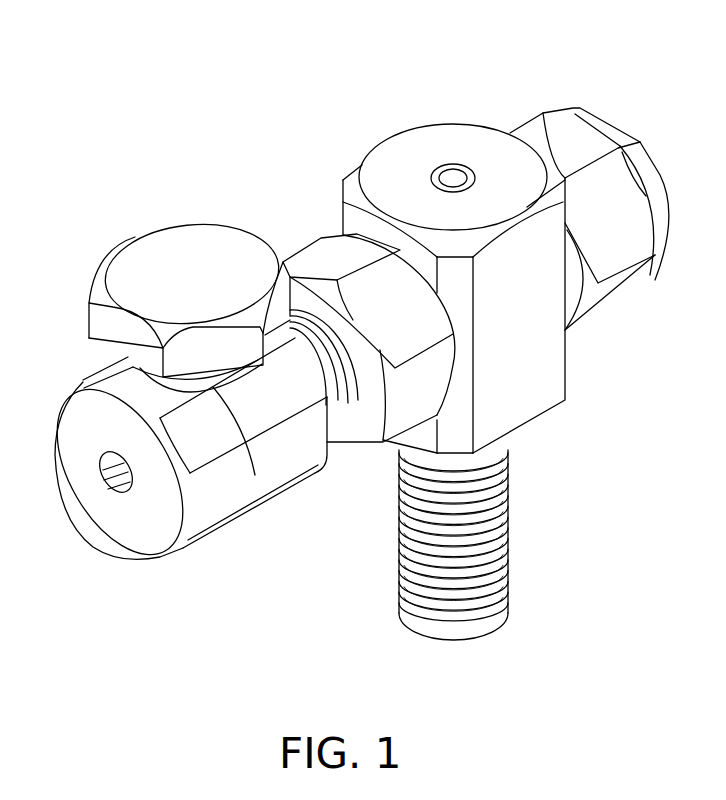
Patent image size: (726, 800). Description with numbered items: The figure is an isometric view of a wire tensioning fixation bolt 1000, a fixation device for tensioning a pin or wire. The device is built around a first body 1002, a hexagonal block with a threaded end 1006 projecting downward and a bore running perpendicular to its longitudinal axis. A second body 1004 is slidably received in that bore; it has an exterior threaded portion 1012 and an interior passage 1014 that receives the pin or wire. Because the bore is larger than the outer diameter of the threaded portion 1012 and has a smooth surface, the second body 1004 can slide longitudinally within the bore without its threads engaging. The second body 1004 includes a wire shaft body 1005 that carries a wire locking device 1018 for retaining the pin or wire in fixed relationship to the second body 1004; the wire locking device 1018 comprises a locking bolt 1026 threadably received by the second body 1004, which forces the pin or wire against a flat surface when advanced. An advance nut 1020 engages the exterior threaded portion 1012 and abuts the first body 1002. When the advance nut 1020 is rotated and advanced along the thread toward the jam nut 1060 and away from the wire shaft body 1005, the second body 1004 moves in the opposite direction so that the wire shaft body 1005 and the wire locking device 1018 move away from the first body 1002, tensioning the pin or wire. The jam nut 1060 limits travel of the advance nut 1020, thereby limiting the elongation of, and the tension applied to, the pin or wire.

The wire tensioning fixation bolt 1000 is at (237, 96).
The first body 1002 is at (399, 119).
The second body 1004 is at (74, 375).
The wire shaft body 1005 is at (200, 548).
The threaded end 1006 is at (503, 515).
The threaded portion 1012 is at (348, 405).
The interior passage 1014 is at (108, 492).
The wire locking device 1018 is at (120, 220).
The advance nut 1020 is at (322, 255).
The locking bolt 1026 is at (255, 475).
The jam nut 1060 is at (577, 133).